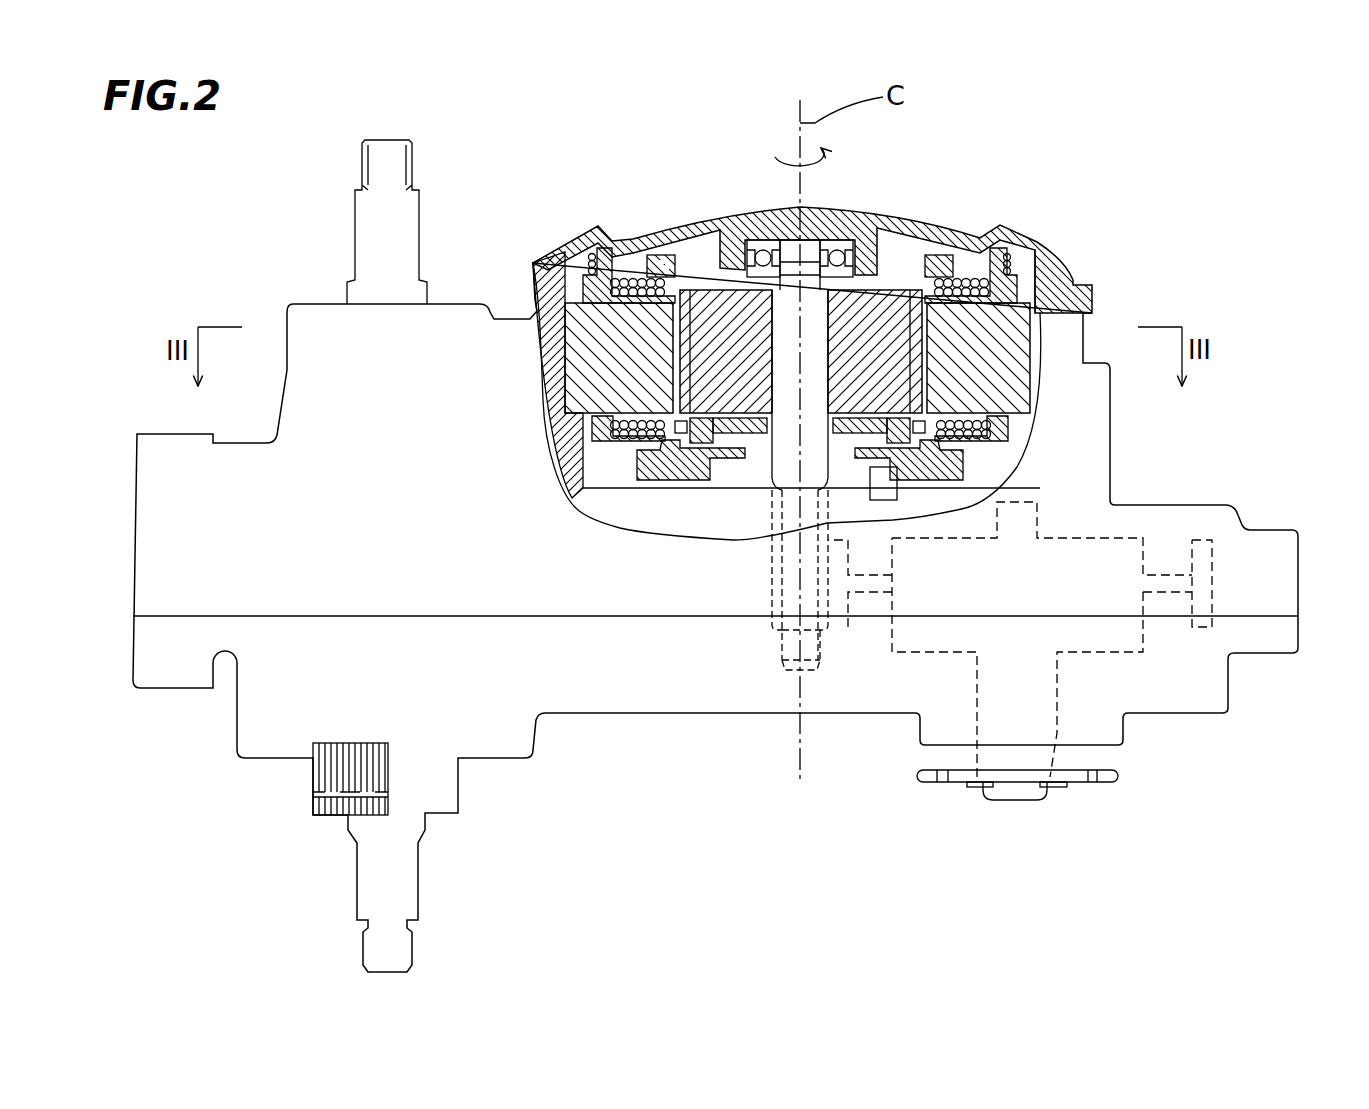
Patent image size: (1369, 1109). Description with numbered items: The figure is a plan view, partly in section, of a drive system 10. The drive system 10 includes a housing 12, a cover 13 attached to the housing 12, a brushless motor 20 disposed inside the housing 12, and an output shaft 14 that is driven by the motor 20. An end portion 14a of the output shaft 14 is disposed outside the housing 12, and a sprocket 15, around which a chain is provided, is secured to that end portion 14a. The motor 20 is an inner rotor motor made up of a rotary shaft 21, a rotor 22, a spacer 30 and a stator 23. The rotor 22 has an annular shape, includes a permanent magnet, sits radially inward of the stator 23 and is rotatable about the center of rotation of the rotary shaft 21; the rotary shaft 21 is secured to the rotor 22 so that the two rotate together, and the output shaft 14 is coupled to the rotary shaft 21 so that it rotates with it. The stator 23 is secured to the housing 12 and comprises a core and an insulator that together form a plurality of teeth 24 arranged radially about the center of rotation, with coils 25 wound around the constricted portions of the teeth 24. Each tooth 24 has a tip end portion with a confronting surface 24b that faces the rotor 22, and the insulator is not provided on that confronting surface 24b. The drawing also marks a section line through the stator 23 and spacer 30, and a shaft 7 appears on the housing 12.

The steering shaft 7 is at (357, 165).
The drive system 10 is at (1205, 202).
The housing 12 is at (1113, 450).
The cover 13 is at (877, 212).
The output shaft 14 is at (977, 697).
The end portion 14a is at (1037, 755).
The sprocket 15 is at (1100, 785).
The brushless motor 20 is at (909, 250).
The rotary shaft 21 is at (807, 310).
The rotor 22 is at (667, 248).
The stator 23 is at (635, 263).
The teeth 24 is at (573, 327).
The confronting surface 24b is at (693, 350).
The coils 25 is at (630, 272).
The spacer 30 is at (661, 244).